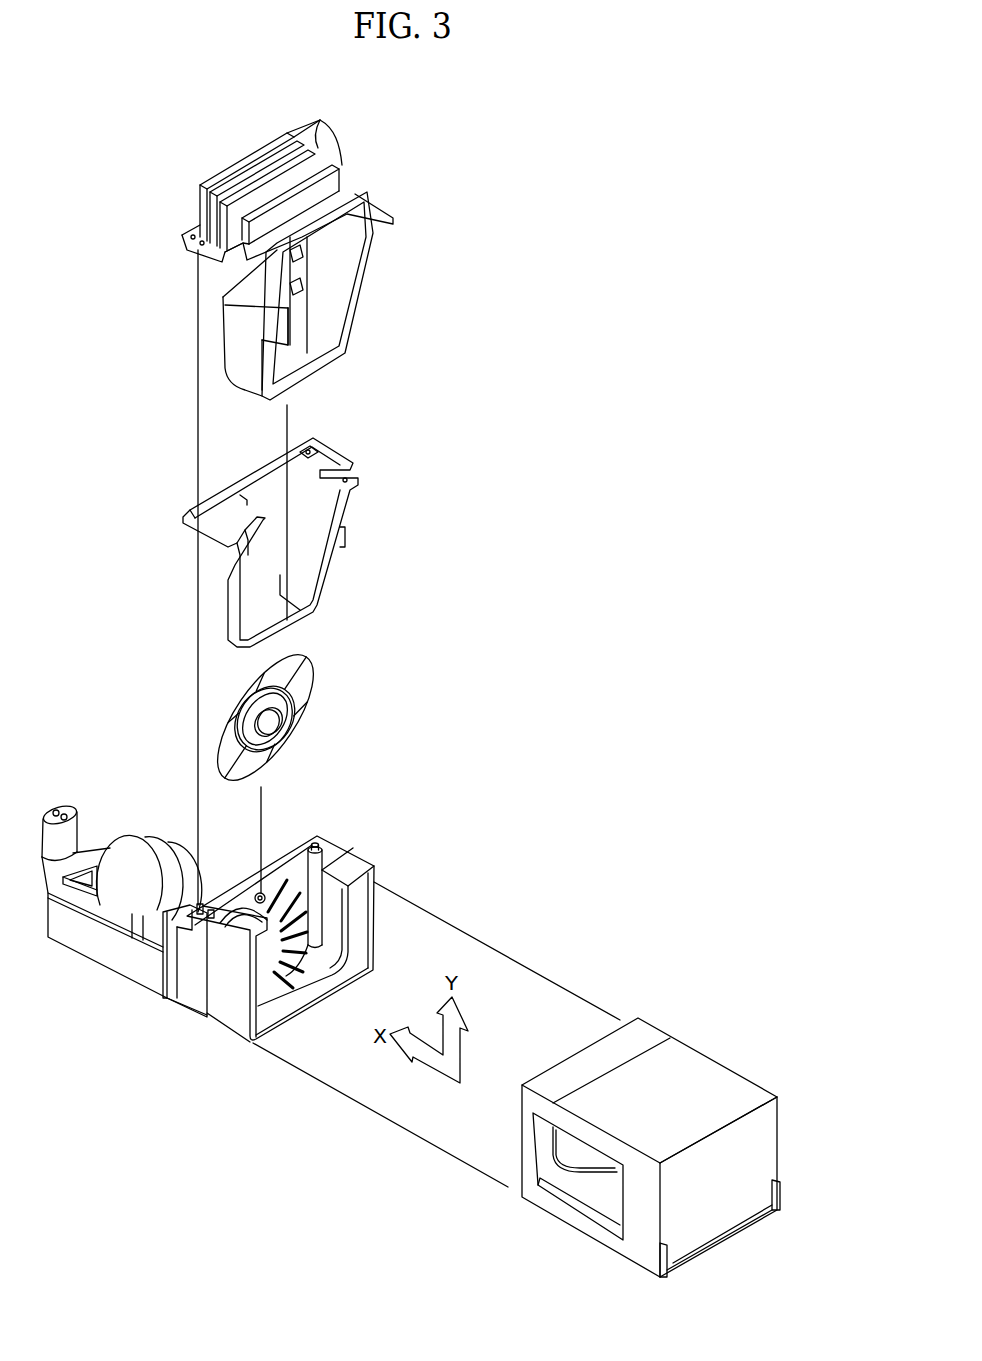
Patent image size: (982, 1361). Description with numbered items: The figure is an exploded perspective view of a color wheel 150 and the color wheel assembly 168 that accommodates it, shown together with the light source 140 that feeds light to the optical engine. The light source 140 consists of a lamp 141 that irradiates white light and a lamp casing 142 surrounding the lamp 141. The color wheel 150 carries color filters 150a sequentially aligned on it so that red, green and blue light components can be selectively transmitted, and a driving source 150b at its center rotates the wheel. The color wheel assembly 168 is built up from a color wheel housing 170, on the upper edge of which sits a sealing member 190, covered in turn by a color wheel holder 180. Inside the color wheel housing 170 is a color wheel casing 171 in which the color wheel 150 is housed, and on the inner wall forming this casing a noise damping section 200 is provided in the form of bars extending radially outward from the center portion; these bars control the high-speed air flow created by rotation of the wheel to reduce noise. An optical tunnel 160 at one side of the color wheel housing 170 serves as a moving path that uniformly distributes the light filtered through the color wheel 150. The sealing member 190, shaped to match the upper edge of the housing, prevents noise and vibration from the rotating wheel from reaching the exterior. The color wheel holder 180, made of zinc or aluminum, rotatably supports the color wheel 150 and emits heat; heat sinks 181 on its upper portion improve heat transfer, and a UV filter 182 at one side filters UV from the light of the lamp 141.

The light source 140 is at (697, 1033).
The lamp 141 is at (595, 1163).
The lamp casing 142 is at (733, 1087).
The color wheel 150 is at (378, 674).
The color filters 150a is at (302, 717).
The driving source 150b is at (272, 728).
The optical tunnel 160 is at (135, 858).
The color wheel assembly 168 is at (450, 325).
The color wheel housing 170 is at (378, 860).
The color wheel casing 171 is at (318, 848).
The color wheel holder 180 is at (372, 312).
The heat sinks 181 is at (271, 172).
The UV filter 182 is at (278, 330).
The sealing member 190 is at (343, 545).
The noise damping section 200 is at (298, 885).